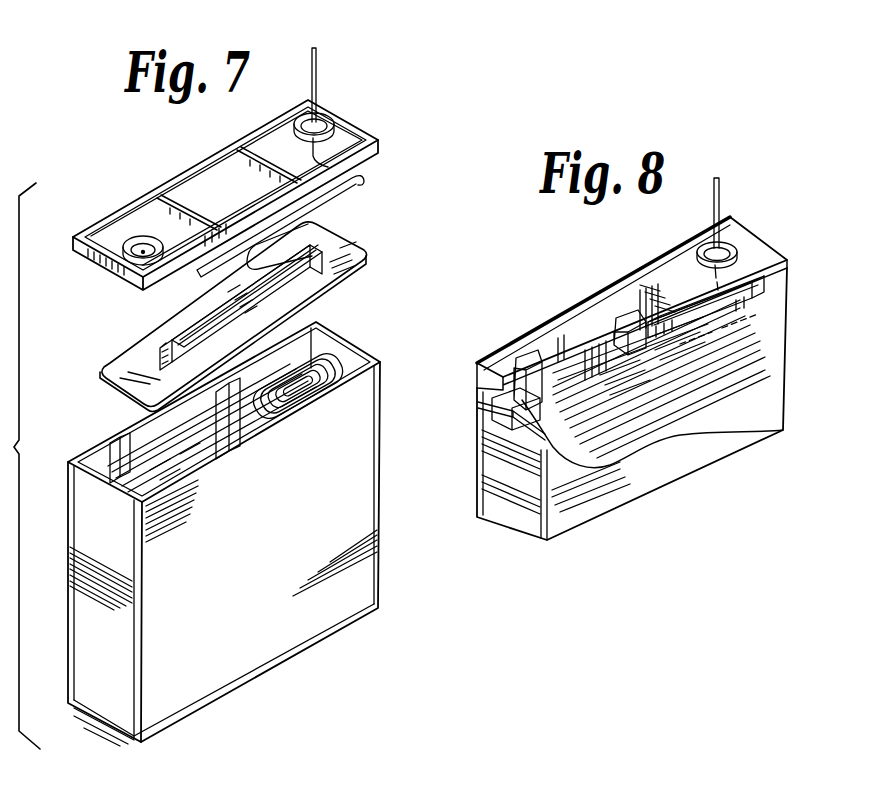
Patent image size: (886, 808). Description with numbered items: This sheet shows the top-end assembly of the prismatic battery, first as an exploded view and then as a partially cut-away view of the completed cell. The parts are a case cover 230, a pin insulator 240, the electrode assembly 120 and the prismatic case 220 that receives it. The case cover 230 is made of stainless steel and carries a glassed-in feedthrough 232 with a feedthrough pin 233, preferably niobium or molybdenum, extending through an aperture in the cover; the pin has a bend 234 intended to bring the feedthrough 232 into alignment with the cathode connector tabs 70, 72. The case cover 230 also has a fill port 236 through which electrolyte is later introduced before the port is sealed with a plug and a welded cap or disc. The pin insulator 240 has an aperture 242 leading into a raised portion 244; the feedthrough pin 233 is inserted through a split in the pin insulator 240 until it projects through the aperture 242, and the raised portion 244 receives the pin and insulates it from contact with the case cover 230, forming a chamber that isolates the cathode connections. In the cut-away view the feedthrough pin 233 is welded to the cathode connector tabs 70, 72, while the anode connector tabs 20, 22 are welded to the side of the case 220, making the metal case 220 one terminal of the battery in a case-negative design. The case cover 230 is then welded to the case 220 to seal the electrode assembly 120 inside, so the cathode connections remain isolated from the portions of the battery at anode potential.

In FIG. 7, the anode connector tab 20 is at (218, 398).
In FIG. 8, the anode connector tab 20 is at (625, 322).
In FIG. 7, the anode connector tab 22 is at (115, 452).
In FIG. 8, the anode connector tab 22 is at (522, 352).
In FIG. 7, the cathode connector tab 70 is at (258, 412).
In FIG. 8, the cathode connector tab 70 is at (698, 432).
In FIG. 7, the cathode connector tab 72 is at (245, 450).
In FIG. 8, the cathode connector tab 72 is at (652, 385).
In FIG. 7, the electrode assembly 120 is at (318, 372).
In FIG. 8, the electrode assembly 120 is at (714, 375).
In FIG. 7, the prismatic case 220 is at (249, 519).
In FIG. 8, the prismatic case 220 is at (786, 372).
In FIG. 7, the case cover 230 is at (377, 112).
In FIG. 8, the case cover 230 is at (780, 256).
In FIG. 7, the feedthrough 232 is at (327, 103).
In FIG. 8, the feedthrough 232 is at (698, 204).
In FIG. 7, the feedthrough pin 233 is at (318, 66).
In FIG. 8, the feedthrough pin 233 is at (723, 207).
In FIG. 7, the bend 234 is at (356, 176).
In FIG. 7, the fill port 236 is at (135, 236).
In FIG. 7, the pin insulator 240 is at (290, 299).
In FIG. 8, the pin insulator 240 is at (553, 425).
In FIG. 7, the aperture 242 is at (332, 252).
In FIG. 8, the aperture 242 is at (735, 327).
In FIG. 7, the raised portion 244 is at (328, 291).